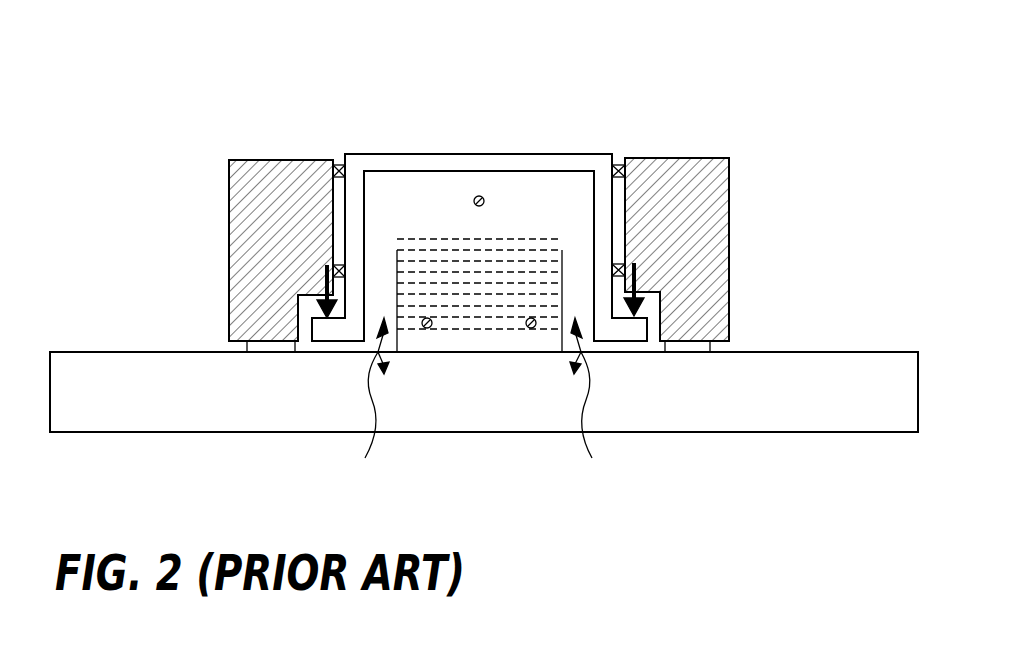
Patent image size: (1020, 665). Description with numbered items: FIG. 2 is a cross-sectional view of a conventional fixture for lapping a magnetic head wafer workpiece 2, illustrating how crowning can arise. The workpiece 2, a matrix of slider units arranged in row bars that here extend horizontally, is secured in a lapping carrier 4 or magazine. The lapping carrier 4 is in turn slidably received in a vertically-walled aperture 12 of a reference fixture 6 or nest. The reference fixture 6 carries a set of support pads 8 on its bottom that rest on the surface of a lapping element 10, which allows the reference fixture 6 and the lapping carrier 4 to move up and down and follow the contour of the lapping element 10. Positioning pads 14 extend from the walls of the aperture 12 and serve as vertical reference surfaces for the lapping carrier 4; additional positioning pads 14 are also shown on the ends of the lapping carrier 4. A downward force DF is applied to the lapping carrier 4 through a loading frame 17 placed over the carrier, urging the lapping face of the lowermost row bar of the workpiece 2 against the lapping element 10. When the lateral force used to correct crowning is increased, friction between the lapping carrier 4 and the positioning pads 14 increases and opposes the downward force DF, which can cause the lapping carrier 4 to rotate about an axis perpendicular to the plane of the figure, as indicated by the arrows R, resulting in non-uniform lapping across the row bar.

The workpiece 2 is at (486, 352).
The lapping carrier 4 is at (437, 170).
The reference fixture 6 is at (280, 160).
The support pads 8 is at (262, 350).
The lapping element 10 is at (808, 352).
The aperture 12 is at (462, 75).
The positioning pads 14 is at (333, 270).
The loading frame 17 is at (525, 154).
The downward force DF is at (327, 268).
The rotation arrows R is at (485, 403).